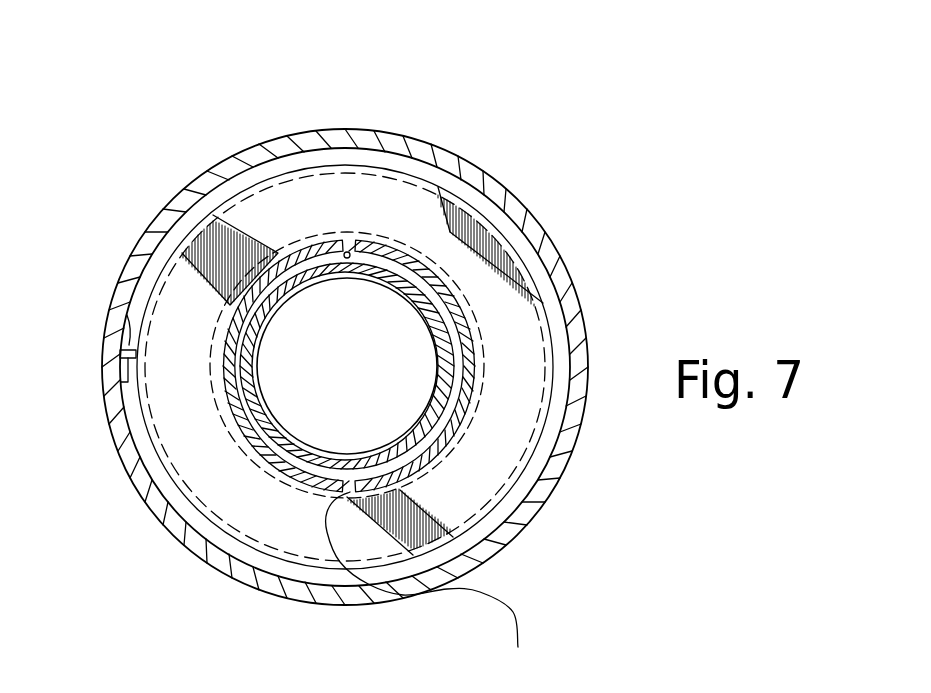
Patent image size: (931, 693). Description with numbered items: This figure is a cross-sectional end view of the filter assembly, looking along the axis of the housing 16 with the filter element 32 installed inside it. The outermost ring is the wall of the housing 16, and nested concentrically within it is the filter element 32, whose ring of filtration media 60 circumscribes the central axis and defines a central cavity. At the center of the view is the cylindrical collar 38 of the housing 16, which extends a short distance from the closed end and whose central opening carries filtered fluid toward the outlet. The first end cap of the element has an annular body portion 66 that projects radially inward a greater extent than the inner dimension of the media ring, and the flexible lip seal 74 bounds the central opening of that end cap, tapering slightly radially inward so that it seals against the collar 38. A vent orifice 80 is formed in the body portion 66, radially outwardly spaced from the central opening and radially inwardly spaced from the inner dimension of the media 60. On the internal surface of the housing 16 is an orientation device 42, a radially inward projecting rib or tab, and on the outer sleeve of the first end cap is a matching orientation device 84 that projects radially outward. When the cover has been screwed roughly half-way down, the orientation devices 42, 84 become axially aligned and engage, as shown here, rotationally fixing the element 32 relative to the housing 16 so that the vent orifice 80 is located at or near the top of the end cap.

The housing 16 is at (582, 282).
The filter element 32 is at (222, 186).
The orientation device 84 is at (120, 304).
The orientation device 42 is at (122, 358).
The filtration media 60 is at (317, 208).
The annular body portion 66 is at (222, 507).
The lip seal 74 is at (262, 426).
The collar 38 is at (432, 430).
The vent orifice 80 is at (350, 257).